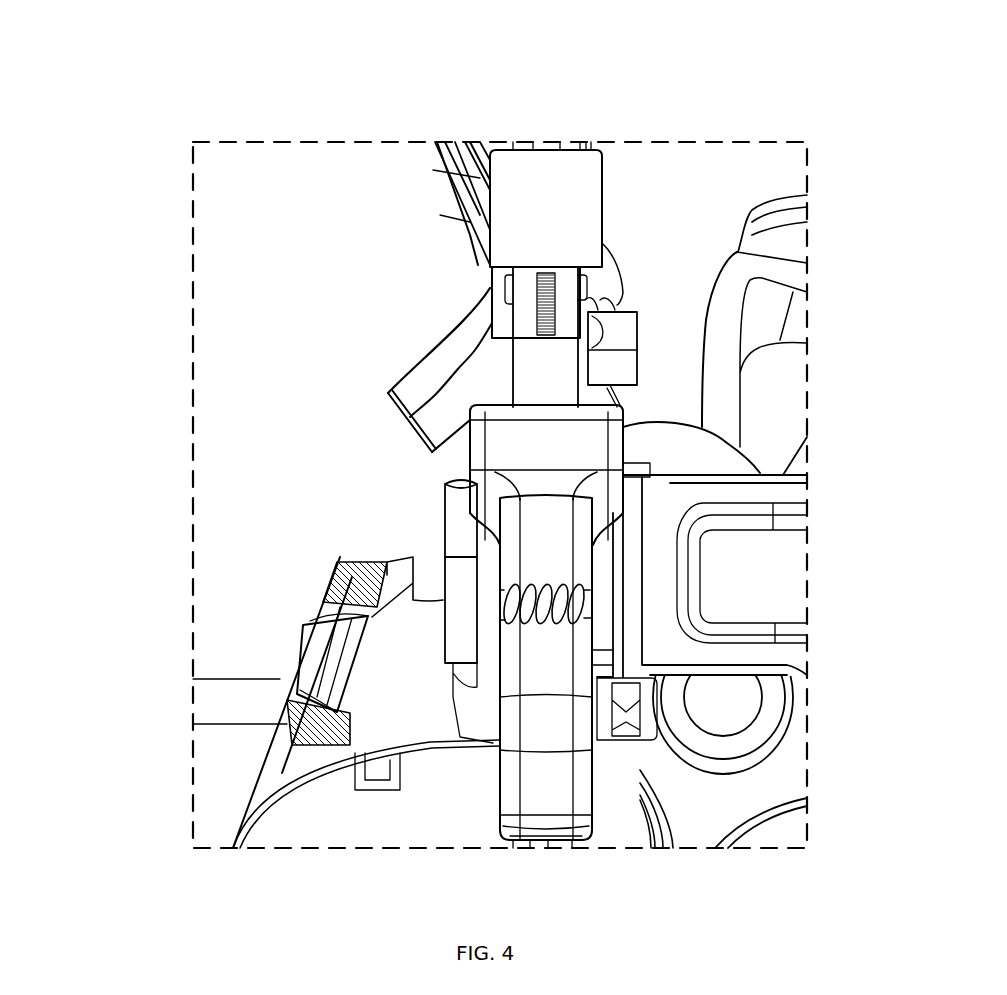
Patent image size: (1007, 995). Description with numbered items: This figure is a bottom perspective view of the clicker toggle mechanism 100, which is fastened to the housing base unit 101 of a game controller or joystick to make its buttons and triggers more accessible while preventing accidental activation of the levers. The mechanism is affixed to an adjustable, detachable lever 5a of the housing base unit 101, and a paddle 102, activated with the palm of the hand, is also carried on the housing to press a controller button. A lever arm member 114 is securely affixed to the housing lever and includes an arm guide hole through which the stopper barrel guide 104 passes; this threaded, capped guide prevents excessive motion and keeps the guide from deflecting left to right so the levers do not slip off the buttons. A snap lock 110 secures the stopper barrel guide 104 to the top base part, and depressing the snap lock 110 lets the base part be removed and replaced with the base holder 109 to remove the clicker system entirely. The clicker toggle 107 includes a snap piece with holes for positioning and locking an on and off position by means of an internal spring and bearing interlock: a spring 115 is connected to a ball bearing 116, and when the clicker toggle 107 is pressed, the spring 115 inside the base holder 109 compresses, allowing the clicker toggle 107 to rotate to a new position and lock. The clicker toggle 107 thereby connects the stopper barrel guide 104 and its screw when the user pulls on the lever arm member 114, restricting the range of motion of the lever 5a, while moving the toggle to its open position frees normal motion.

The clicker toggle mechanism 100 is at (893, 94).
The adjustable lever 5a is at (447, 173).
The housing base unit 101 is at (256, 792).
The paddle 102 is at (807, 840).
The stopper barrel guide 104 is at (513, 363).
The clicker toggle 107 is at (550, 458).
The base holder 109 is at (367, 705).
The snap lock 110 is at (312, 620).
The lever arm member 114 is at (490, 213).
The spring 115 is at (540, 603).
The ball bearing 116 is at (508, 603).